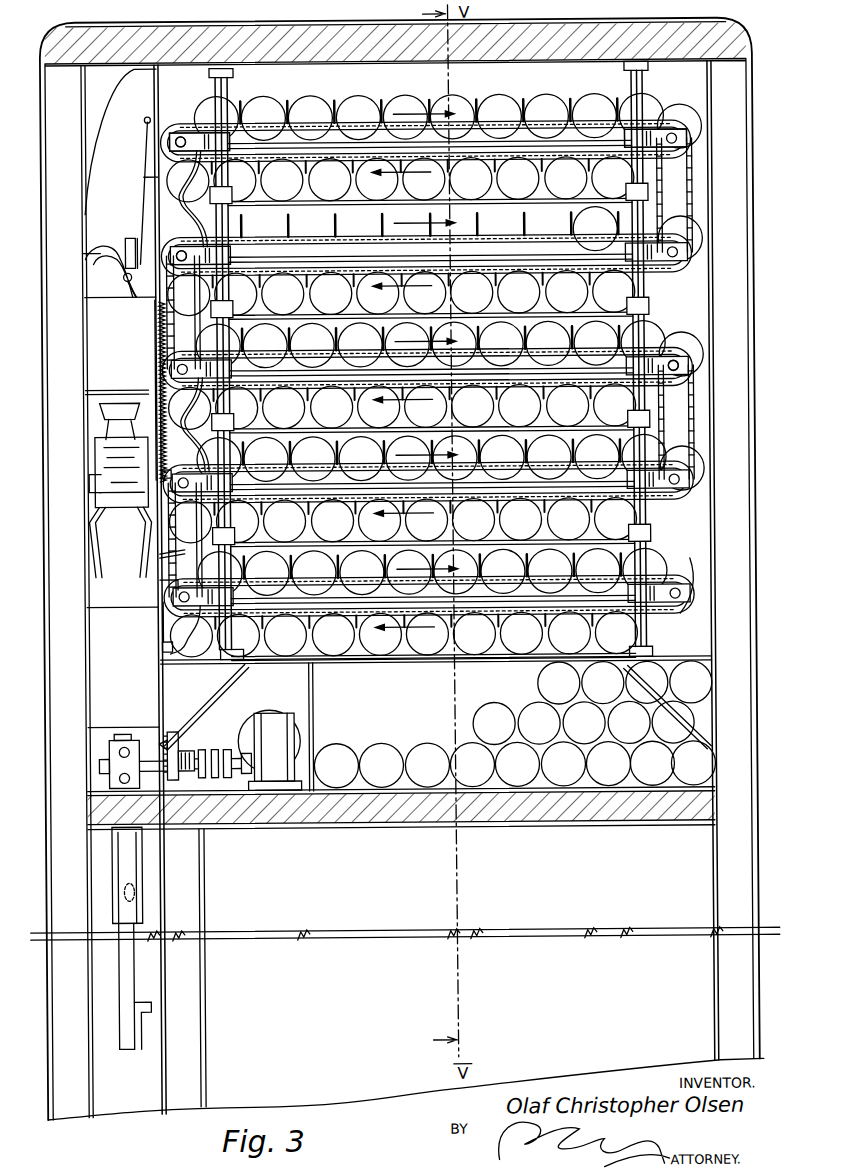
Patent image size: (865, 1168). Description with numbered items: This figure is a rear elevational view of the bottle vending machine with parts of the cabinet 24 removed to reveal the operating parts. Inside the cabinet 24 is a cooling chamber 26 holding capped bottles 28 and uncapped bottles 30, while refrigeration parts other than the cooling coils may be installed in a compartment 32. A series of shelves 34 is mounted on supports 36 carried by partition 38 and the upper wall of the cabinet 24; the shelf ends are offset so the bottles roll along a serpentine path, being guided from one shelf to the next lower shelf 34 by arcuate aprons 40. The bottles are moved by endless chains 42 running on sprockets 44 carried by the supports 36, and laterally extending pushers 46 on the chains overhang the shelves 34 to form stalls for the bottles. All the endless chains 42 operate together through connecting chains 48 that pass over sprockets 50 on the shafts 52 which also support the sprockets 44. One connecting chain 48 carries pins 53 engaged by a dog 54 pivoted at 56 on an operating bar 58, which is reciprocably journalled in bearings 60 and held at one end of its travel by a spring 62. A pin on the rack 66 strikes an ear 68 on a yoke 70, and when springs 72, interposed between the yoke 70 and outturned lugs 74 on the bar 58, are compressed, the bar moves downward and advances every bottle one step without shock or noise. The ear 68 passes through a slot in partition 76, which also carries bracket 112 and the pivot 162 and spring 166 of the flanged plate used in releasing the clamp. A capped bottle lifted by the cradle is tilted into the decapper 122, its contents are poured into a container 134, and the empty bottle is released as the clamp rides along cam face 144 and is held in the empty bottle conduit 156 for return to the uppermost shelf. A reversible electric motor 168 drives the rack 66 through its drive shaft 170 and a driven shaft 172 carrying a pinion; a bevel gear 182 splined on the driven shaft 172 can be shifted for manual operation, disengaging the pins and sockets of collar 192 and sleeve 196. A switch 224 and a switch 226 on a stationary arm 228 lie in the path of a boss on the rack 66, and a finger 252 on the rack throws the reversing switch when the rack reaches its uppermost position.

The cabinet 24 is at (417, 568).
The cooling chamber 26 is at (395, 364).
The capped bottles 28 is at (482, 647).
The uncapped bottles 30 is at (358, 100).
The compartment 32 is at (402, 587).
The shelves 34 is at (357, 206).
The supports 36 is at (215, 650).
The partition 38 is at (397, 658).
The arcuate aprons 40 is at (682, 303).
The endless chains 42 is at (486, 240).
The sprockets 44 is at (160, 150).
The pushers 46 is at (402, 394).
The connecting chains 48 is at (692, 210).
The sprockets 50 is at (692, 157).
The shafts 52 is at (184, 135).
The pins 53 is at (215, 515).
The dog 54 is at (160, 581).
The pivot 56 is at (160, 554).
The operating bar 58 is at (163, 613).
The bearings 60 is at (170, 469).
The spring 62 is at (159, 351).
The rack 66 is at (132, 979).
The ear 68 is at (156, 738).
The yoke 70 is at (173, 730).
The springs 72 is at (180, 758).
The outturned lugs 74 is at (184, 790).
The partition 76 is at (150, 176).
The bracket 112 is at (121, 591).
The decapper 122 is at (96, 495).
The container 134 is at (113, 401).
The cam face 144 is at (90, 270).
The empty bottle conduit 156 is at (126, 190).
The pivot 162 is at (128, 279).
The spring 166 is at (118, 248).
The electric motor 168 is at (273, 712).
The drive shaft 170 is at (240, 781).
The driven shaft 172 is at (97, 762).
The bevel gear 182 is at (208, 777).
The collar 192 is at (201, 748).
The sleeve 196 is at (226, 748).
The switch 224 is at (133, 890).
The switch 226 is at (108, 835).
The arm 228 is at (114, 732).
The finger 252 is at (142, 1047).